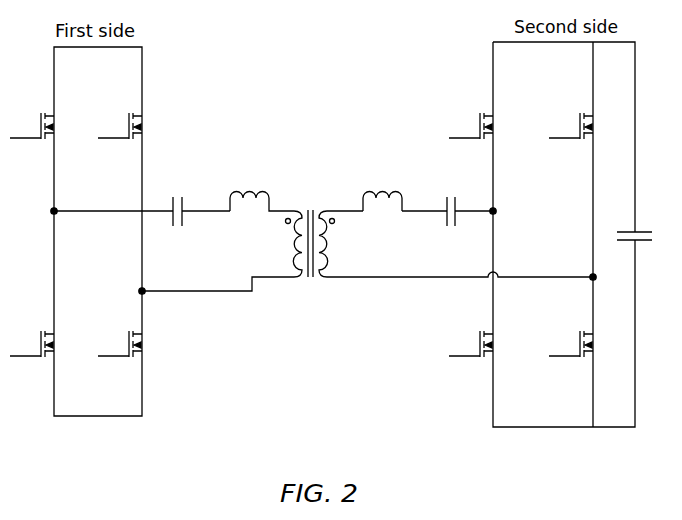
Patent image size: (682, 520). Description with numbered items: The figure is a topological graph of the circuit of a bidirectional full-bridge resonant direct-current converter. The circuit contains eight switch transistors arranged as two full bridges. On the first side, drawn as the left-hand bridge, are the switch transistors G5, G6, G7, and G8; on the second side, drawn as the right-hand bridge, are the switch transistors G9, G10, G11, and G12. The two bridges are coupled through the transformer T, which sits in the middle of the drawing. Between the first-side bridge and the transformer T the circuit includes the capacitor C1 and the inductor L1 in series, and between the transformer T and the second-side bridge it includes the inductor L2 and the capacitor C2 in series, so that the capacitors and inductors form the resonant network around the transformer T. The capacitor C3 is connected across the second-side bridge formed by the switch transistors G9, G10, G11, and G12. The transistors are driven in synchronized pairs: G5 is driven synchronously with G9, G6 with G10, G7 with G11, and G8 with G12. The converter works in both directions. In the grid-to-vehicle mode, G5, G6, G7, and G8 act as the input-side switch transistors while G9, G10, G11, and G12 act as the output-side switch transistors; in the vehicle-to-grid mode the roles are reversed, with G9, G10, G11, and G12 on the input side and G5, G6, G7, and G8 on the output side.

The switch transistor G5 is at (32, 126).
The switch transistor G6 is at (119, 126).
The switch transistor G7 is at (32, 344).
The switch transistor G8 is at (119, 344).
The switch transistor G9 is at (471, 126).
The switch transistor G10 is at (569, 126).
The switch transistor G11 is at (469, 344).
The switch transistor G12 is at (568, 344).
The capacitor C1 is at (177, 198).
The inductor L1 is at (262, 191).
The transformer T is at (367, 241).
The inductor L2 is at (382, 191).
The capacitor C2 is at (447, 198).
The capacitor C3 is at (640, 227).